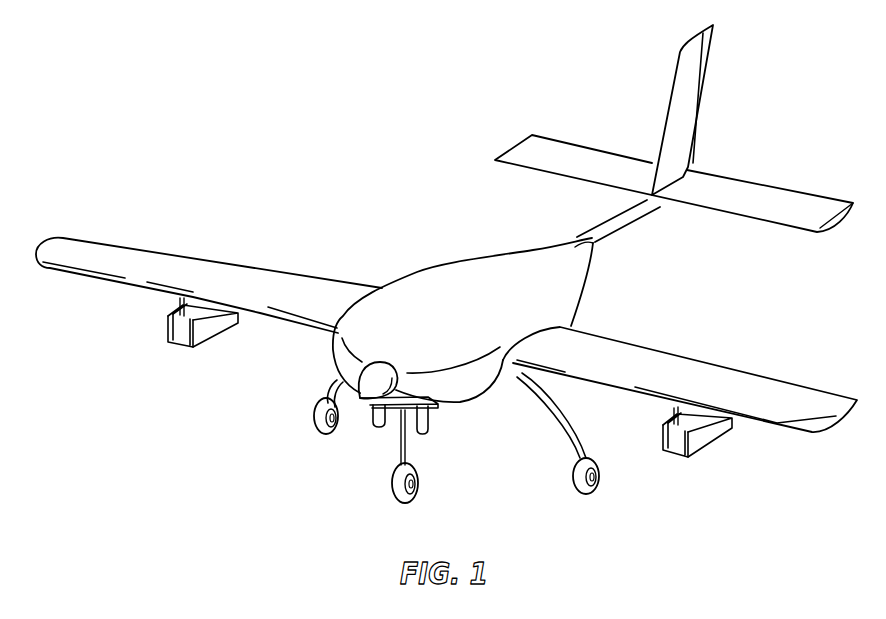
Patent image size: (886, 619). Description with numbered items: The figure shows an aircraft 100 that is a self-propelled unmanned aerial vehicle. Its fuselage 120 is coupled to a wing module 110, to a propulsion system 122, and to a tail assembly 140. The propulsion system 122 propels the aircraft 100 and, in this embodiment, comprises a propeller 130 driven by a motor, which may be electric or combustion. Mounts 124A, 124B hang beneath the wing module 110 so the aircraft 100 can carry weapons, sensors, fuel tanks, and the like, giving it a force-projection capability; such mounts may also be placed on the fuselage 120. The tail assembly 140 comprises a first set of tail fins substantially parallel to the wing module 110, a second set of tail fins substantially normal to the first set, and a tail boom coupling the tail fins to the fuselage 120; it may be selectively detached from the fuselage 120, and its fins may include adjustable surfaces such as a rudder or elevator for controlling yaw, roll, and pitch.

The aircraft 100 is at (347, 93).
The wing module 110 is at (190, 263).
The fuselage 120 is at (483, 271).
The propulsion system 122 is at (424, 449).
The mount 124A is at (217, 338).
The mount 124B is at (708, 449).
The propeller 130 is at (362, 418).
The tail assembly 140 is at (747, 187).